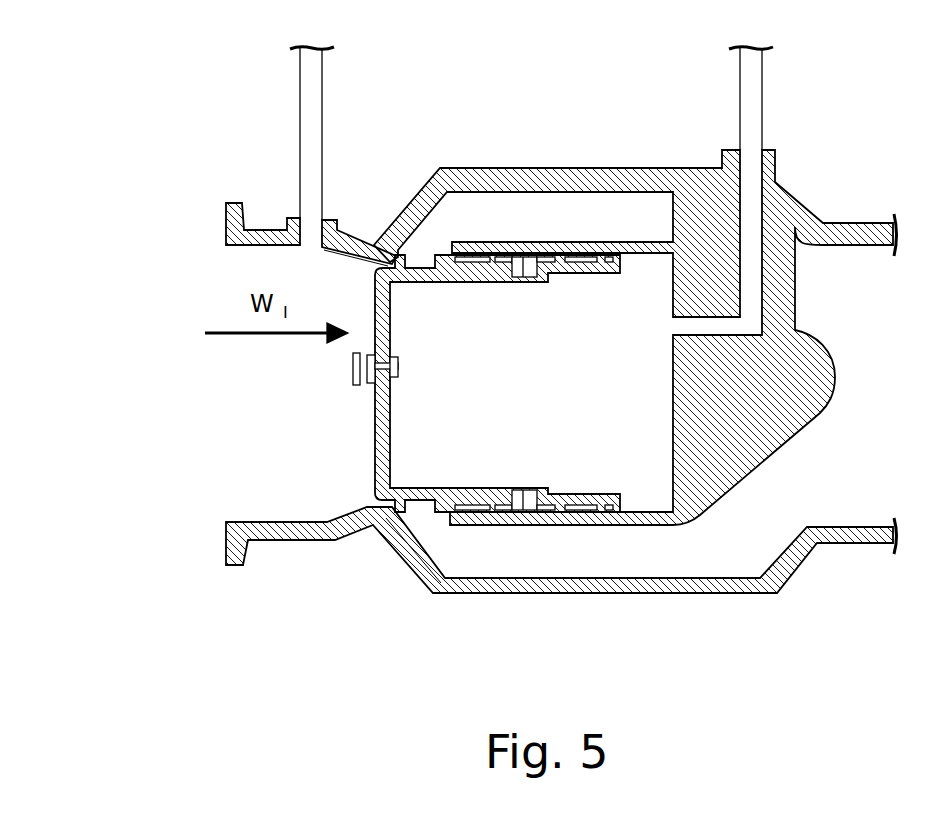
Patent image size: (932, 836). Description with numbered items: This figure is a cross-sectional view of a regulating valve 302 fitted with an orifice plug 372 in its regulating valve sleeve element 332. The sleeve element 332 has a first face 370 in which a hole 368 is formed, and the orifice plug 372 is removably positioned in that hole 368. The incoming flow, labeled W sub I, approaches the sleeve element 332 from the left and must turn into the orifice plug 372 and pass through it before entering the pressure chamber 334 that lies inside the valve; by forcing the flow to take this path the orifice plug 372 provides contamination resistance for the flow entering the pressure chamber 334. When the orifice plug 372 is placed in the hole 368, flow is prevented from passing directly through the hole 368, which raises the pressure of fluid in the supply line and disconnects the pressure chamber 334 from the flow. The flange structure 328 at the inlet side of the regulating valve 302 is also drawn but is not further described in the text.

The regulating valve 302 is at (503, 168).
The inlet flange 328 is at (268, 247).
The regulating valve sleeve element 332 is at (365, 435).
The pressure chamber 334 is at (557, 387).
The hole 368 is at (392, 349).
The first face 370 is at (372, 392).
The orifice plug 372 is at (397, 372).